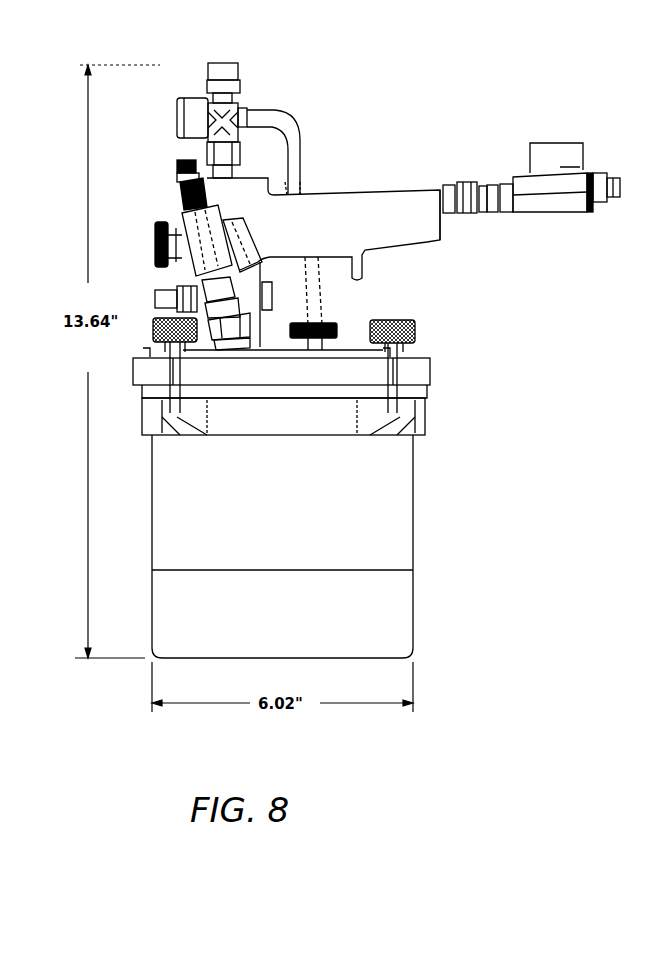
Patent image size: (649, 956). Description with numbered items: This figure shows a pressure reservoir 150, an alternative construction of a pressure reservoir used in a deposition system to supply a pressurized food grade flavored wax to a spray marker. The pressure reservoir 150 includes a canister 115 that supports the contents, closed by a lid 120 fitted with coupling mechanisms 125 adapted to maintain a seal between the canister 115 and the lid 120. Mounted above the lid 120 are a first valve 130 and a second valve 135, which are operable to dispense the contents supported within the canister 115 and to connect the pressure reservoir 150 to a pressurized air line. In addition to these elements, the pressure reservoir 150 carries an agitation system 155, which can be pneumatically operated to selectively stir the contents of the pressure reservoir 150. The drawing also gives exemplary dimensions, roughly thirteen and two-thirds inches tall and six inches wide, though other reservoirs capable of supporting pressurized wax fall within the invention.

The pressure reservoir 150 is at (400, 92).
The agitation system 155 is at (240, 76).
The first valve 130 is at (185, 172).
The second valve 135 is at (548, 143).
The coupling mechanisms 125 is at (153, 335).
The lid 120 is at (430, 375).
The canister 115 is at (415, 637).